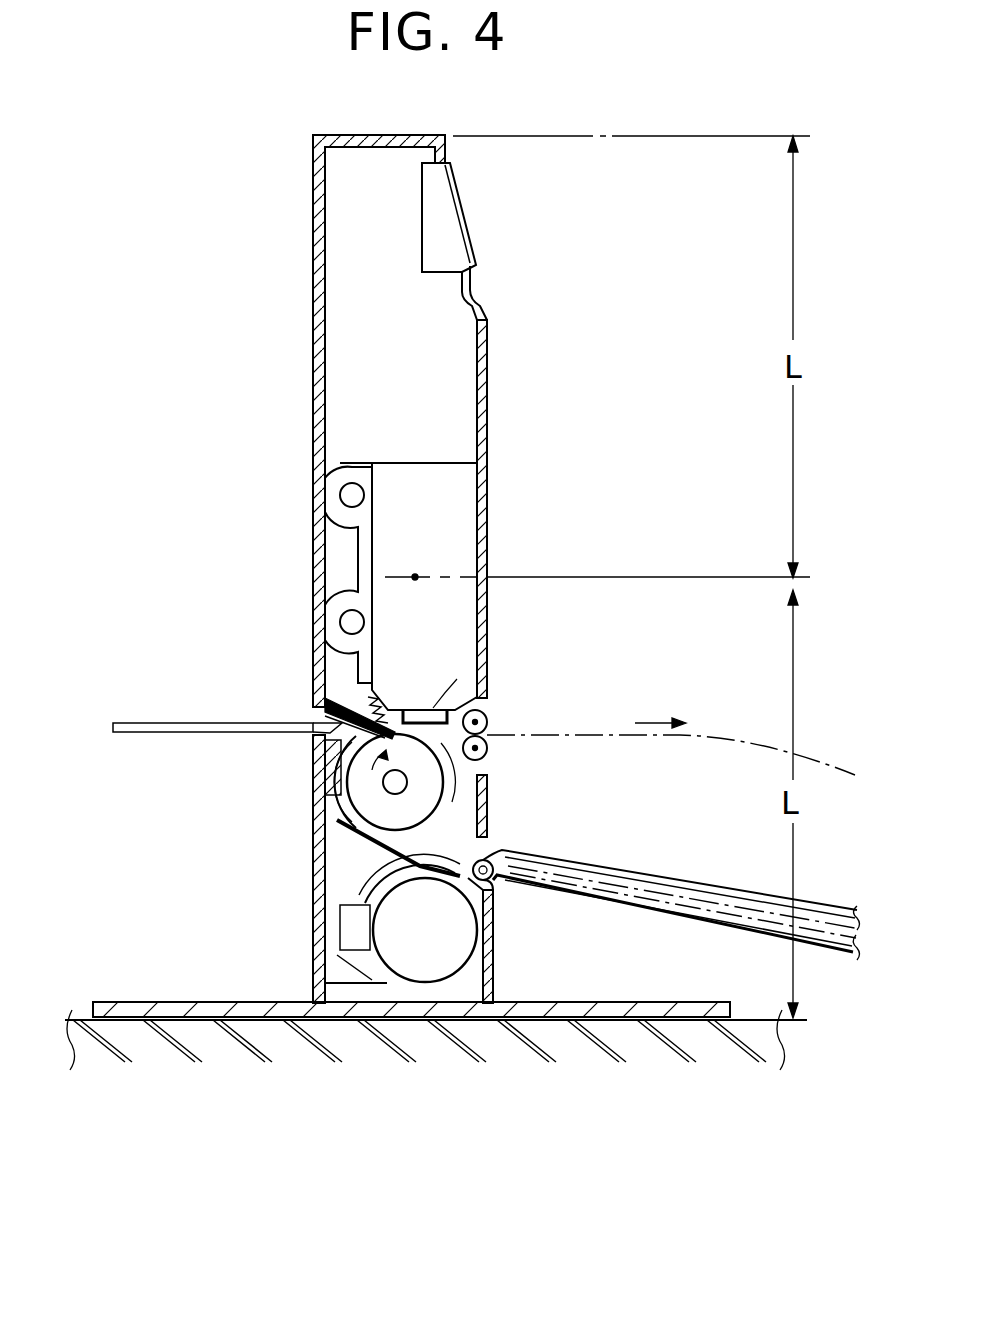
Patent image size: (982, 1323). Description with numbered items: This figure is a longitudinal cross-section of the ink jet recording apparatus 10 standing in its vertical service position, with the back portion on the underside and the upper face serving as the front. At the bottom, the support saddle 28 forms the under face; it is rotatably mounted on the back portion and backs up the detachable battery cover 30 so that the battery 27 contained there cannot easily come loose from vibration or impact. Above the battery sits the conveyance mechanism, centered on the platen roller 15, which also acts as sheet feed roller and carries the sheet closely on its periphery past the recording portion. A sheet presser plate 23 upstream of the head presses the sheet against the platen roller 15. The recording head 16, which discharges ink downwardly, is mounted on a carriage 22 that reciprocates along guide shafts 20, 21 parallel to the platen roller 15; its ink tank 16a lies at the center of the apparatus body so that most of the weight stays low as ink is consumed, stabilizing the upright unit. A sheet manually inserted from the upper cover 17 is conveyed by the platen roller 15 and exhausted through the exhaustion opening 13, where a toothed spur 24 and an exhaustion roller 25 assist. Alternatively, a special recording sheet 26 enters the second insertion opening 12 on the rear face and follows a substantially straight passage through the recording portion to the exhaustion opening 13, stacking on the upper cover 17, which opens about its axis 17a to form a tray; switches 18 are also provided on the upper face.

The recording apparatus 10 is at (490, 344).
The switches 18 is at (444, 225).
The ink tank 16a is at (462, 510).
The recording head 16 is at (447, 706).
The guide shaft 21 is at (325, 500).
The carriage 22 is at (348, 478).
The guide shaft 20 is at (348, 612).
The sheet presser plate 23 is at (348, 690).
The spur 24 is at (489, 717).
The exhaustion roller 25 is at (488, 753).
The recording sheet exhaustion opening 13 is at (502, 722).
The second recording sheet insertion opening 12 is at (300, 712).
The special recording sheet 26 is at (232, 713).
The platen roller 15 is at (348, 822).
The battery cover 30 is at (447, 948).
The battery 27 is at (493, 975).
The axis 17a is at (498, 880).
The upper cover 17 is at (850, 945).
The support saddle 28 is at (525, 1018).